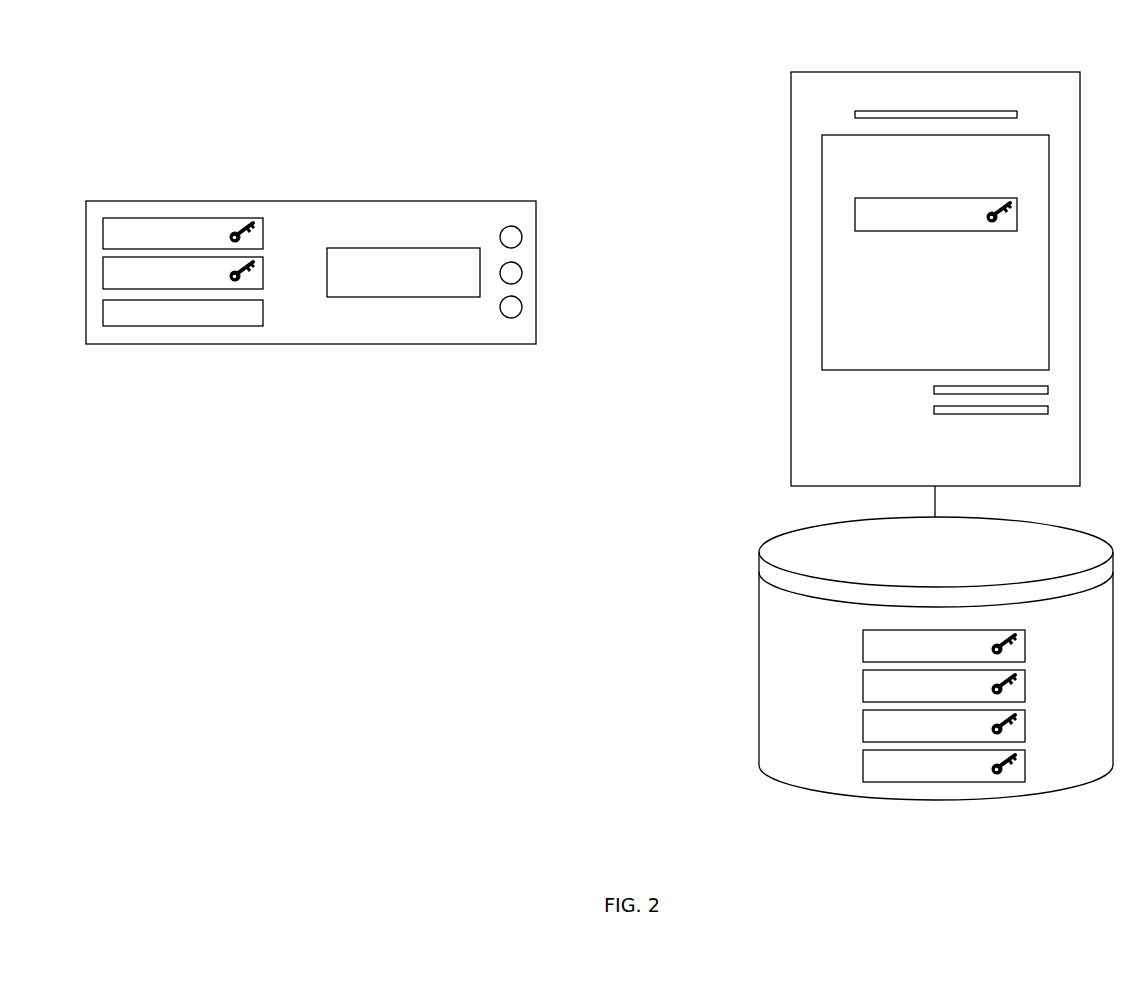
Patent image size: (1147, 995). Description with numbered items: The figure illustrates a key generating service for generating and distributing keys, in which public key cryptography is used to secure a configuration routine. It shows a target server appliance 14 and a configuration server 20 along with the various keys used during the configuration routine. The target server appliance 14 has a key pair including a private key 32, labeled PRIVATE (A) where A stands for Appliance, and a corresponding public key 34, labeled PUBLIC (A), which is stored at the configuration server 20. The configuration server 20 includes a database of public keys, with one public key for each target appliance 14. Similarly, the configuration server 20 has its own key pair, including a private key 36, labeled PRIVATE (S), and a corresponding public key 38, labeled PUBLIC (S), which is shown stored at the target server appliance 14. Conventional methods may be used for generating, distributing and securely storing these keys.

The target server appliance 14 is at (315, 252).
The private key 32 is at (265, 235).
The public key 38 is at (265, 282).
The configuration server 20 is at (936, 416).
The private key 36 is at (856, 213).
The public key 34 is at (863, 646).